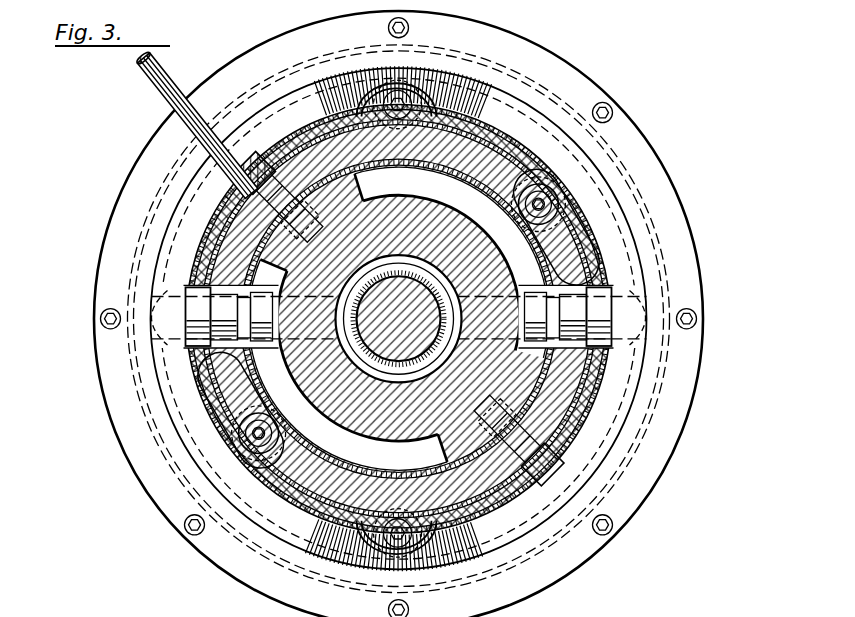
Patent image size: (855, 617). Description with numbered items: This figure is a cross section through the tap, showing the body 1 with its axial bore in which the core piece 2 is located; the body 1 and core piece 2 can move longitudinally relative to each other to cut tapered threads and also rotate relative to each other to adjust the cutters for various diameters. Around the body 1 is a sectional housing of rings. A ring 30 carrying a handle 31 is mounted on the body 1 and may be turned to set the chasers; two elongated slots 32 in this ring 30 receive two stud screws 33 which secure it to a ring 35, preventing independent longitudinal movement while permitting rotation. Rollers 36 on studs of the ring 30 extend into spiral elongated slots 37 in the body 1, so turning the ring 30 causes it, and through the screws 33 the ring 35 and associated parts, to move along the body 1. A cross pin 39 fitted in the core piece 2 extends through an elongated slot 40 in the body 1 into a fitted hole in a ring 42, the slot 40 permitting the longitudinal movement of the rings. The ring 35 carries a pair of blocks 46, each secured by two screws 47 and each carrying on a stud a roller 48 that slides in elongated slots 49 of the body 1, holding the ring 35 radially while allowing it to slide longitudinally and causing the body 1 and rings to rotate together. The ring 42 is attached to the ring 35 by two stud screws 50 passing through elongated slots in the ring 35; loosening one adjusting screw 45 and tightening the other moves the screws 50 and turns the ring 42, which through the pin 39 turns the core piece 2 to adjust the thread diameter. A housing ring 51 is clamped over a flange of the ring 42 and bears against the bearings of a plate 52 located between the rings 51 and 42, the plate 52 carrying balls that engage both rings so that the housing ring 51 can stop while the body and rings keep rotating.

The body 1 is at (482, 268).
The core piece 2 is at (399, 318).
The ring 30 is at (210, 222).
The handle 31 is at (165, 83).
The elongated slots 32 is at (590, 225).
The stud screws 33 is at (550, 198).
The ring 35 is at (470, 68).
The rollers 36 is at (546, 302).
The spiral elongated slots 37 is at (528, 360).
The cross pin 39 is at (640, 292).
The elongated slot 40 is at (470, 252).
The ring 42 is at (565, 95).
The adjusting screws 45 is at (385, 100).
The blocks 46 is at (287, 180).
The screws 47 is at (262, 200).
The roller 48 is at (300, 215).
The elongated slots 49 is at (362, 185).
The stud screws 50 is at (413, 100).
The housing ring 51 is at (655, 462).
The plate 52 is at (393, 360).